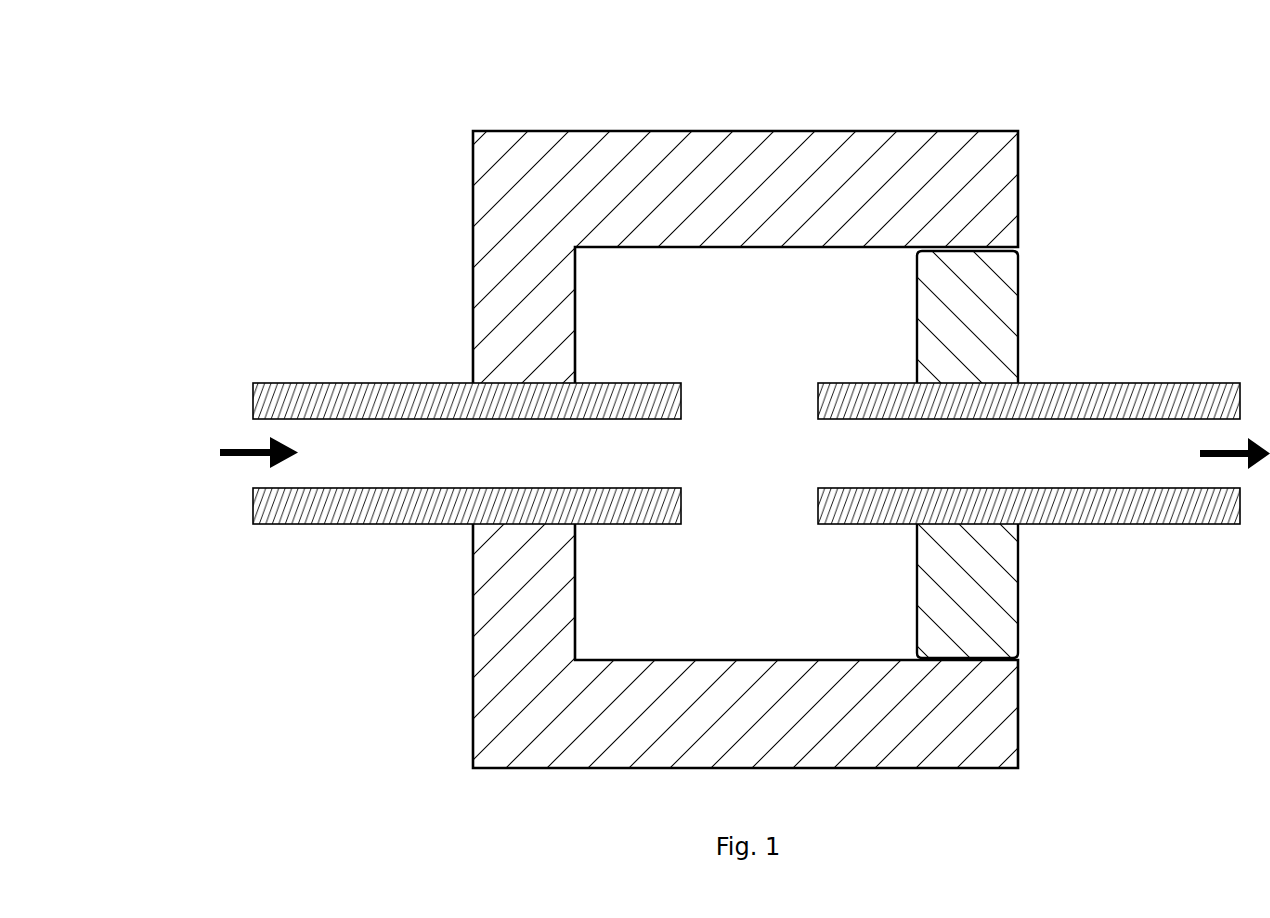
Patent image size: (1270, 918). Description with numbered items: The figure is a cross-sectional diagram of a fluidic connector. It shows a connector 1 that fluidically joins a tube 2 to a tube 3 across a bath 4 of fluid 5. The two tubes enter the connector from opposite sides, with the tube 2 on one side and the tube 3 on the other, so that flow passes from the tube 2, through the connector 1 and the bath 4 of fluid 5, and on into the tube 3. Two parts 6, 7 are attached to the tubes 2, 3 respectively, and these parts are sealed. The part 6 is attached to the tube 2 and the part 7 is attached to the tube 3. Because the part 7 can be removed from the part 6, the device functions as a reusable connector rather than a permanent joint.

The connector 1 is at (635, 418).
The tube 2 is at (356, 382).
The tube 3 is at (1163, 383).
The bath 4 is at (1018, 185).
The fluid 5 is at (742, 530).
The part 6 is at (473, 183).
The part 7 is at (1018, 583).